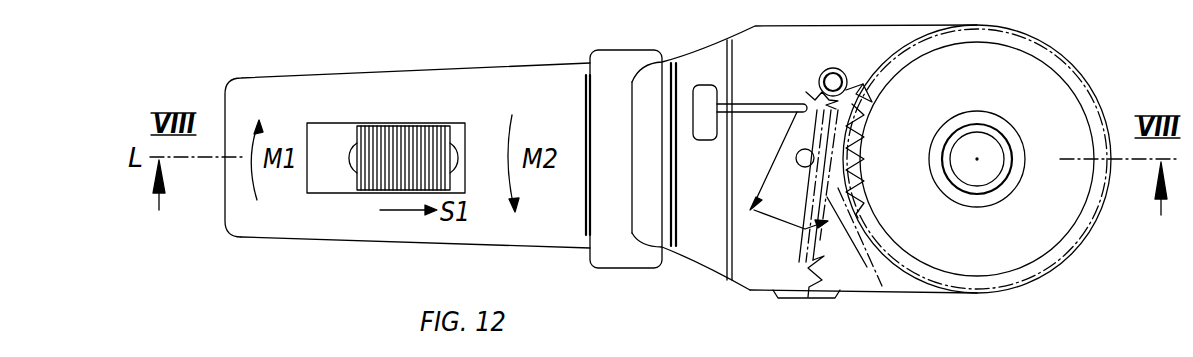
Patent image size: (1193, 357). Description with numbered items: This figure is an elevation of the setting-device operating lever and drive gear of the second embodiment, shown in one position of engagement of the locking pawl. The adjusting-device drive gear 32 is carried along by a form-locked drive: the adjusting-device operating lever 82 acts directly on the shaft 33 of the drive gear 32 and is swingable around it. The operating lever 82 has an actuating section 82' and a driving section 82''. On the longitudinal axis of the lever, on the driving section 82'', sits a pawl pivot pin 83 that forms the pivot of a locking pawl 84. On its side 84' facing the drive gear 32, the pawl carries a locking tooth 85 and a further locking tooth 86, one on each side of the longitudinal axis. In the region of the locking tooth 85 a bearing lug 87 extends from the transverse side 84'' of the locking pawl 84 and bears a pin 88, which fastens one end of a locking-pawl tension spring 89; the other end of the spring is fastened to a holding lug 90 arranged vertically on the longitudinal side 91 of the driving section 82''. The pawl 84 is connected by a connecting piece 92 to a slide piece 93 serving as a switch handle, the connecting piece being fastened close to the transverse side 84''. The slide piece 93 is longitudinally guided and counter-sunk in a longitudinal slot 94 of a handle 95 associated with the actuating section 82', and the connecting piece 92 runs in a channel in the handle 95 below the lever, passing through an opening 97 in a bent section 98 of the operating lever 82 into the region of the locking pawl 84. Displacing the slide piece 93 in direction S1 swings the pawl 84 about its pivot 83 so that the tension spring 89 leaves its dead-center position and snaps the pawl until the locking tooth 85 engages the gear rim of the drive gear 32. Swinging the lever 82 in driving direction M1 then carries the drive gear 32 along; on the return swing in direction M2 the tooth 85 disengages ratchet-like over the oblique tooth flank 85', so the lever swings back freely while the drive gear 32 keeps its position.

The adjusting-device drive gear 32 is at (1040, 230).
The shaft of the drive gear 33 is at (980, 170).
The adjusting-device operating lever 82 is at (804, 183).
The actuating section 82' is at (407, 128).
The driving section 82'' is at (792, 312).
The pawl pivot pin 83 is at (805, 164).
The locking pawl 84 is at (739, 216).
The side of the locking pawl facing the drive gear 84' is at (861, 186).
The transverse side of the locking pawl 84'' is at (763, 79).
The locking tooth 85 is at (889, 146).
The tooth flank 85' is at (881, 129).
The locking tooth 86 is at (816, 208).
The bearing lug 87 is at (828, 75).
The pin 88 is at (836, 82).
The locking-pawl tension spring 89 is at (880, 283).
The holding lug 90 is at (812, 300).
The longitudinal side of the driving section 91 is at (926, 292).
The connecting piece 92 is at (738, 106).
The slide piece 93 is at (403, 156).
The longitudinal slot 94 is at (330, 182).
The handle 95 is at (368, 218).
The opening 97 is at (697, 95).
The bent section 98 is at (697, 205).